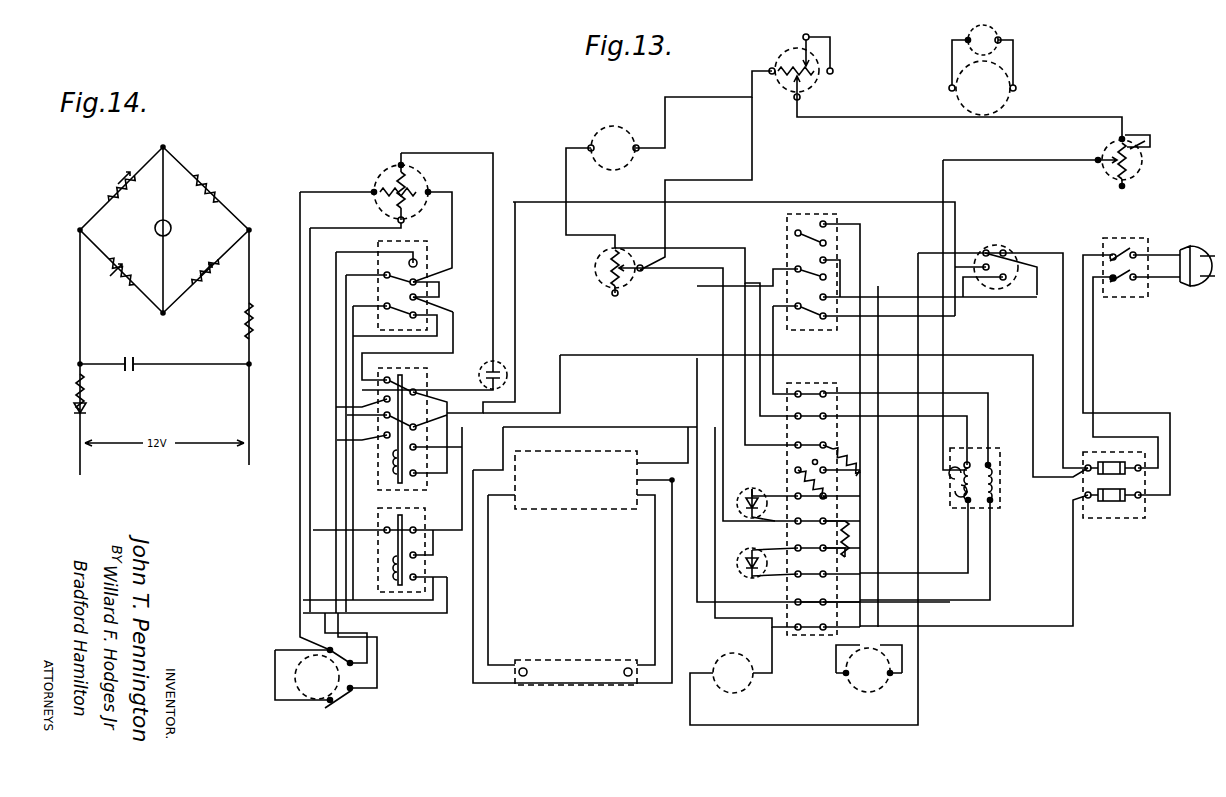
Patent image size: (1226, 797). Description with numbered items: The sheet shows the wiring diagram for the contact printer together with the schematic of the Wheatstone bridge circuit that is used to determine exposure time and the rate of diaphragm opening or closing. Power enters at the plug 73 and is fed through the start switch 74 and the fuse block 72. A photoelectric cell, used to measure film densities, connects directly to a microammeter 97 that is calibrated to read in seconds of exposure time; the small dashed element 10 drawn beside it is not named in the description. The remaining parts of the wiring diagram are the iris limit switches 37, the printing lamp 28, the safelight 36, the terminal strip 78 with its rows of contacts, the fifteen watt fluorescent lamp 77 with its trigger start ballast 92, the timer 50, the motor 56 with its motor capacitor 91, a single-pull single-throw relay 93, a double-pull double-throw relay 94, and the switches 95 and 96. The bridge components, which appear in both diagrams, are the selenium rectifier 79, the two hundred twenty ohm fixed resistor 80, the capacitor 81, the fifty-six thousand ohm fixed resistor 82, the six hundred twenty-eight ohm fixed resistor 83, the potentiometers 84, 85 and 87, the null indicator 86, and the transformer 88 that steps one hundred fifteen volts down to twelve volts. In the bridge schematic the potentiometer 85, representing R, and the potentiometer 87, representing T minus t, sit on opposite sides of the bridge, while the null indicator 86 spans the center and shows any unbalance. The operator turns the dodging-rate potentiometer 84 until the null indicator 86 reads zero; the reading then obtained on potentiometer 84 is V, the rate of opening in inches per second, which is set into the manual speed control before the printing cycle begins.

In FIG. 13, the motor 56 is at (383, 175).
In FIG. 13, the switch 95 is at (430, 235).
In FIG. 13, the motor capacitor 91 is at (482, 363).
In FIG. 13, the double-pull, double-throw relay 94 is at (376, 488).
In FIG. 13, the single-pull single-throw relay 93 is at (376, 536).
In FIG. 13, the iris limit switches 37 is at (345, 695).
In FIG. 13, the trigger start ballast 92 is at (600, 513).
In FIG. 13, the fluorescent lamp 77 is at (600, 690).
In FIG. 14, the null indicator 86 is at (154, 229).
In FIG. 13, the null indicator 86 is at (624, 136).
In FIG. 14, the potentiometer 85 is at (112, 273).
In FIG. 13, the potentiometer 85 is at (808, 82).
In FIG. 14, the potentiometer 84 is at (124, 182).
In FIG. 13, the potentiometer 84 is at (626, 288).
In FIG. 13, the switch 96 is at (838, 220).
In FIG. 13, the timer motor 10 is at (1000, 33).
In FIG. 13, the microammeter 97 is at (1008, 100).
In FIG. 14, the potentiometer 87 is at (206, 274).
In FIG. 13, the potentiometer 87 is at (1142, 165).
In FIG. 13, the timer 50 is at (995, 246).
In FIG. 13, the plug 73 is at (1207, 241).
In FIG. 13, the start switch 74 is at (1148, 300).
In FIG. 14, the 628 ohm fixed resistor 83 is at (218, 192).
In FIG. 13, the 628 ohm fixed resistor 83 is at (858, 452).
In FIG. 14, the capacitor 81 is at (138, 369).
In FIG. 13, the capacitor 81 is at (755, 490).
In FIG. 14, the 56,000 ohm fixed resistor 82 is at (253, 310).
In FIG. 13, the 56,000 ohm fixed resistor 82 is at (828, 497).
In FIG. 14, the 220 ohm fixed resistor 80 is at (75, 393).
In FIG. 13, the 220 ohm fixed resistor 80 is at (847, 532).
In FIG. 14, the selenium rectifier 79 is at (75, 414).
In FIG. 13, the selenium rectifier 79 is at (750, 577).
In FIG. 13, the terminal strip 78 is at (812, 637).
In FIG. 13, the safelight 36 is at (750, 688).
In FIG. 13, the printing lamp 28 is at (885, 685).
In FIG. 13, the transformer 88 is at (1003, 493).
In FIG. 13, the fuse block 72 is at (1130, 518).